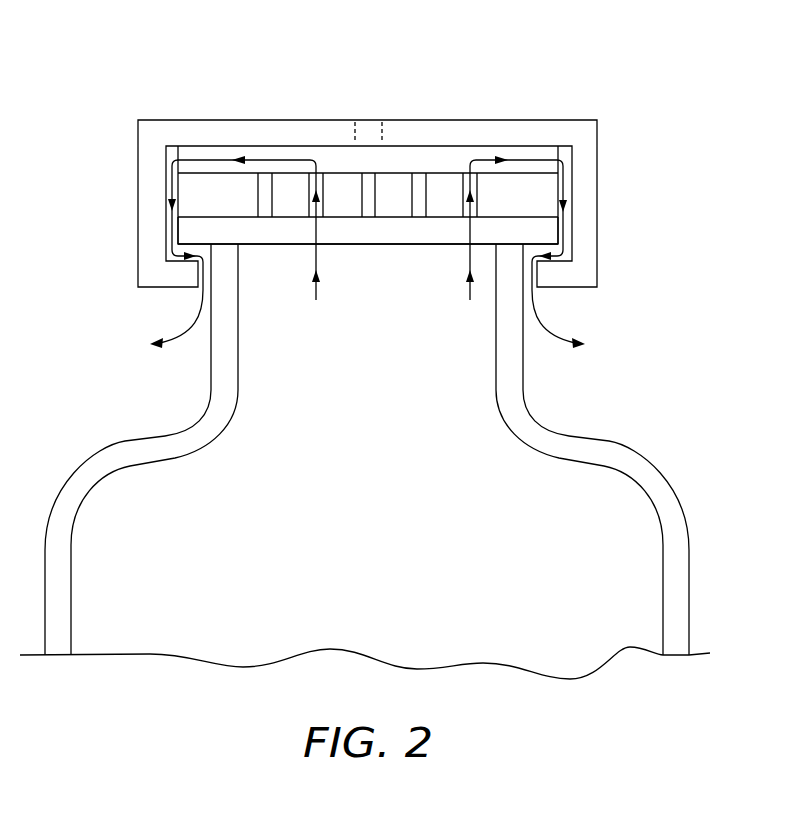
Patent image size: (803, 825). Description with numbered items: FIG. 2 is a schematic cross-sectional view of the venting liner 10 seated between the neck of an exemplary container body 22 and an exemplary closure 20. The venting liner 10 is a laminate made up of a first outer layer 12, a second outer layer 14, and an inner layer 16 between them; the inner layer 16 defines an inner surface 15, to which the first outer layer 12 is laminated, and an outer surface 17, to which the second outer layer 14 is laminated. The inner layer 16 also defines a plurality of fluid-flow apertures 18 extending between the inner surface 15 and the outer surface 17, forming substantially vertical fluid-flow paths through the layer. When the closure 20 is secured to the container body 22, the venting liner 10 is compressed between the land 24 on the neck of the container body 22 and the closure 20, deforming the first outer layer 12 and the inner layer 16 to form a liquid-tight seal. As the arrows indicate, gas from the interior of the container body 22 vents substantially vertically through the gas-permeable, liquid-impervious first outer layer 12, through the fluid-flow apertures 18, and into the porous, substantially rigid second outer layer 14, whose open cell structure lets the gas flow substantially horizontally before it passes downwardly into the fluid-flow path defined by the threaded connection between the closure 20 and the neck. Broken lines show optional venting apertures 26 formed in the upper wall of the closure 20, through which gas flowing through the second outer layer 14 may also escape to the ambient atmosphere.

The venting liner 10 is at (535, 187).
The first outer layer 12 is at (187, 237).
The second outer layer 14 is at (331, 178).
The inner surface 15 is at (172, 212).
The inner layer 16 is at (190, 193).
The outer surface 17 is at (172, 171).
The fluid-flow apertures 18 is at (418, 177).
The closure 20 is at (590, 212).
The container body 22 is at (653, 477).
The land 24 is at (515, 364).
The venting apertures 26 is at (368, 133).